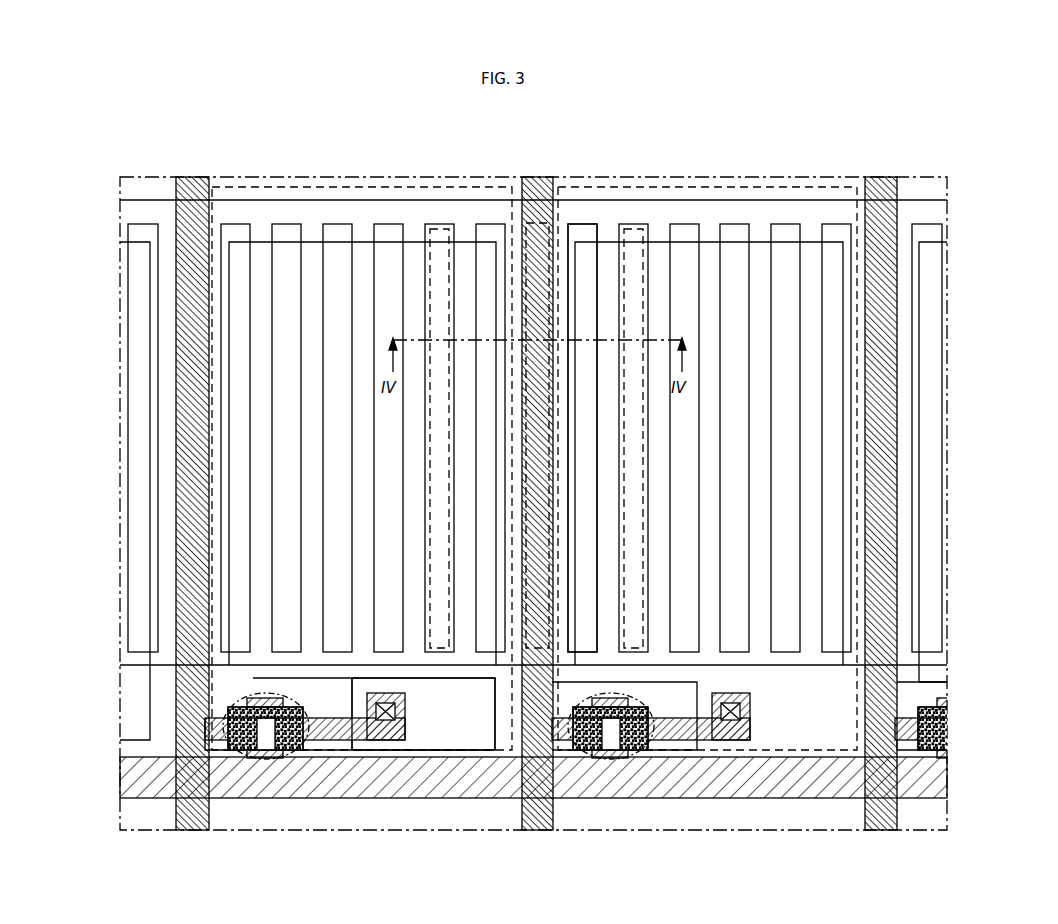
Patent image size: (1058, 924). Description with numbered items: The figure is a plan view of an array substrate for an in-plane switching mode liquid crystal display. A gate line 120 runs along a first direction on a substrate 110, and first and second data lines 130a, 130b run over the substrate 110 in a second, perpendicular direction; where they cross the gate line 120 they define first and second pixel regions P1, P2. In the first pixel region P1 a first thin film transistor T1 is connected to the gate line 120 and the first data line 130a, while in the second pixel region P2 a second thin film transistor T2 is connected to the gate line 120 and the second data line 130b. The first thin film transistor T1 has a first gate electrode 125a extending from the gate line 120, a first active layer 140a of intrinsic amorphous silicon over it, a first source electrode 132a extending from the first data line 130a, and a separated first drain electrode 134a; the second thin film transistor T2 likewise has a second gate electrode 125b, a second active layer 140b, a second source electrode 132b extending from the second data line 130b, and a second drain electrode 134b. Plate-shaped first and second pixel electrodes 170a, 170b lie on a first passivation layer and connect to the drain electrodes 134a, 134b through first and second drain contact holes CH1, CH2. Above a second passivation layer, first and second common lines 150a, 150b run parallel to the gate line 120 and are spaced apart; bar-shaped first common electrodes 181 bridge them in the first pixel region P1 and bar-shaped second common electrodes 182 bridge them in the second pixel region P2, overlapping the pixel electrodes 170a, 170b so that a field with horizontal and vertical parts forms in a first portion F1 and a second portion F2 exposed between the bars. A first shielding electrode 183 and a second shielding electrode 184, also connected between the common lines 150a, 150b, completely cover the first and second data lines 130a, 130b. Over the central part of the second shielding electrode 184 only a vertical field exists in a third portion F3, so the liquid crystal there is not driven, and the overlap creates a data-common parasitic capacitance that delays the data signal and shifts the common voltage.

The substrate 110 is at (936, 834).
The gate line 120 is at (388, 799).
The first gate electrode 125a is at (260, 698).
The second gate electrode 125b is at (605, 698).
The first data line 130a is at (176, 381).
The second data line 130b is at (524, 186).
The first source electrode 132a is at (229, 708).
The second source electrode 132b is at (574, 708).
The first drain electrode 134a is at (327, 718).
The second drain electrode 134b is at (672, 718).
The first active layer 140a is at (283, 752).
The second active layer 140b is at (628, 752).
The first common line 150a is at (577, 224).
The second common line 150b is at (448, 672).
The first pixel electrode 170a is at (345, 230).
The second pixel electrode 170b is at (735, 230).
The first common electrodes 181 is at (267, 450).
The second common electrodes 182 is at (611, 450).
The first shielding electrode 183 is at (156, 319).
The second shielding electrode 184 is at (570, 380).
The first pixel region P1 is at (290, 186).
The second pixel region P2 is at (706, 186).
The first portion F1 is at (441, 226).
The second portion F2 is at (633, 226).
The third portion F3 is at (547, 223).
The first drain contact hole CH1 is at (387, 703).
The second drain contact hole CH2 is at (732, 703).
The first thin film transistor T1 is at (258, 752).
The second thin film transistor T2 is at (603, 752).